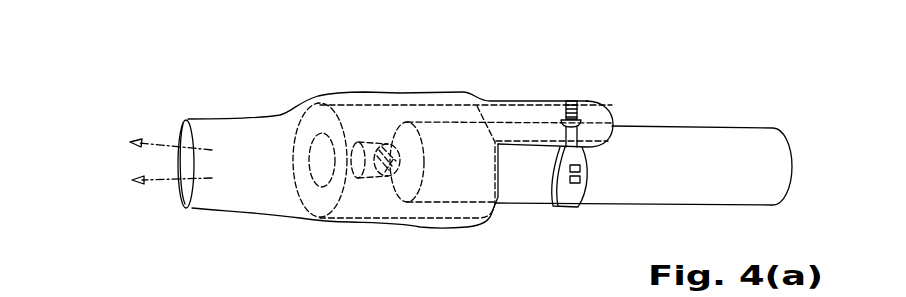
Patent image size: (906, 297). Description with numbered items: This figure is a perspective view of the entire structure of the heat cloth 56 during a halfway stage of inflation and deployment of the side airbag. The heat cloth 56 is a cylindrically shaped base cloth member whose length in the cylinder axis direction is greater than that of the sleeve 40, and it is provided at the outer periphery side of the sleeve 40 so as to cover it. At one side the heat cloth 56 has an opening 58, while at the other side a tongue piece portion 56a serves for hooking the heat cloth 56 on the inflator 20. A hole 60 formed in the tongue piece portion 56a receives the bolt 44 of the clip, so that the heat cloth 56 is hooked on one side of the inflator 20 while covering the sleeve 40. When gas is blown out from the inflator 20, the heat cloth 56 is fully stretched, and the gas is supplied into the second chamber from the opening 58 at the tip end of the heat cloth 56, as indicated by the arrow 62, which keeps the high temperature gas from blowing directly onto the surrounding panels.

The inflator 20 is at (693, 140).
The sleeve 40 is at (370, 119).
The bolt 44 is at (572, 100).
The heat cloth 56 is at (256, 128).
The tongue piece portion 56a is at (515, 116).
The opening 58 is at (177, 140).
The hole 60 is at (582, 121).
The arrow 62 is at (171, 177).